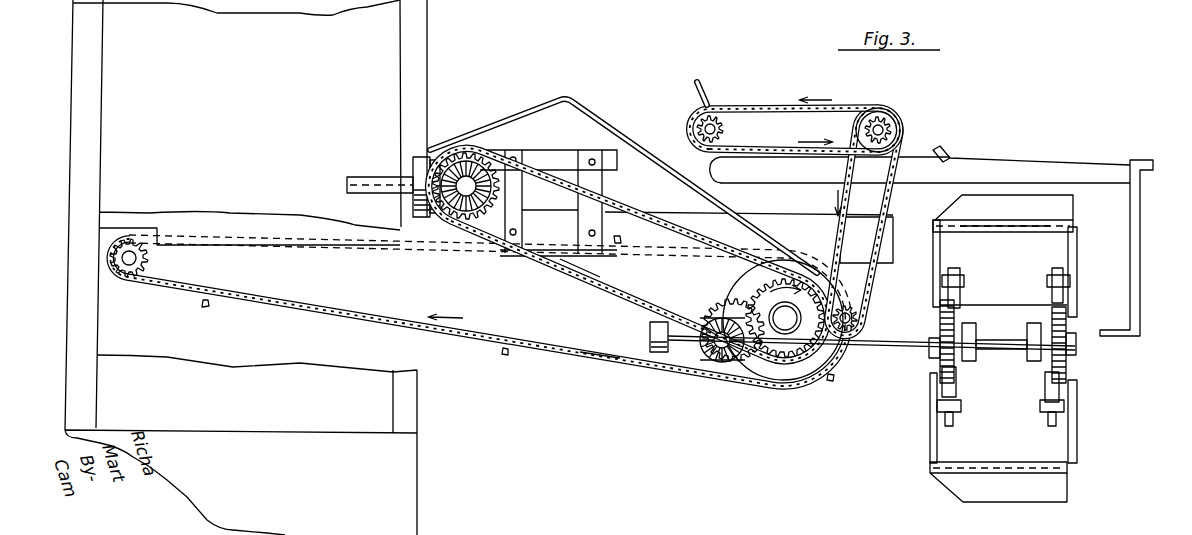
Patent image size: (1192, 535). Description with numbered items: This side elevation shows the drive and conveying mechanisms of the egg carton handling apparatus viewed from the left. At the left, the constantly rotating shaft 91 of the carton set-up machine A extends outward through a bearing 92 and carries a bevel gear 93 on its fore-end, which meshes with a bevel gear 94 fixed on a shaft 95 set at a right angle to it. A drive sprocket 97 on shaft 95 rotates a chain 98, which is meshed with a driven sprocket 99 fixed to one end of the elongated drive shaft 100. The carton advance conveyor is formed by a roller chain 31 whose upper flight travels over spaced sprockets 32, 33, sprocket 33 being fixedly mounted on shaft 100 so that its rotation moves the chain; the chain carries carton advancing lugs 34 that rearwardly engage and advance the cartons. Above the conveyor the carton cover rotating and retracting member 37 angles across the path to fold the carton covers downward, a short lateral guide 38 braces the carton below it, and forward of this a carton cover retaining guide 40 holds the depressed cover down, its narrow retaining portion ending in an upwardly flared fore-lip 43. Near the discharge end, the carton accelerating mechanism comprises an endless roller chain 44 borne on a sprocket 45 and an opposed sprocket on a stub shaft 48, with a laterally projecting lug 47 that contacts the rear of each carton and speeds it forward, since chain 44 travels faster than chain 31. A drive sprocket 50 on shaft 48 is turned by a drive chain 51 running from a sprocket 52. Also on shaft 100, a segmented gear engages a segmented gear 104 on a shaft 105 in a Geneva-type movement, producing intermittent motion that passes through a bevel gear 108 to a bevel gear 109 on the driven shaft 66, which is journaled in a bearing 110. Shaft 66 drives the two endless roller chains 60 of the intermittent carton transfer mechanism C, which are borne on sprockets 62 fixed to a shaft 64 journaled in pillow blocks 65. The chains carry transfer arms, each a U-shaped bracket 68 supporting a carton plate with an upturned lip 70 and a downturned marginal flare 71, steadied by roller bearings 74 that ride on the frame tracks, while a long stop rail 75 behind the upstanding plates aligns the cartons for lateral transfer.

The roller chain 31 is at (598, 364).
The sprocket 32 is at (138, 272).
The sprocket 33 is at (800, 368).
The carton advancing lug 34 is at (298, 240).
The carton cover rotating and retracting member 37 is at (608, 120).
The short lateral guide 38 is at (552, 152).
The carton cover retaining guide 40 is at (795, 172).
The upwardly flared fore-lip 43 is at (948, 151).
The endless roller chain 44 is at (778, 106).
The sprocket 45 is at (748, 129).
The lug 47 is at (706, 92).
The stub shaft 48 is at (881, 128).
The drive sprocket 50 is at (900, 140).
The drive chain 51 is at (894, 224).
The drive sprocket 52 is at (853, 308).
The endless roller chain 60 is at (936, 358).
The sprocket 62 is at (938, 340).
The shaft 64 is at (1000, 350).
The pillow block 65 is at (971, 362).
The driven shaft 66 is at (880, 350).
The U-shaped bracket 68 is at (941, 258).
The upturned lip 70 is at (1038, 230).
The downturned marginal flare 71 is at (998, 230).
The roller bearing 74 is at (1050, 283).
The stop rail 75 is at (1141, 200).
The constantly rotating shaft 91 is at (372, 180).
The bearing 92 is at (424, 160).
The bevel gear 93 is at (440, 162).
The bevel gear 94 is at (455, 200).
The shaft 95 is at (466, 212).
The drive sprocket 97 is at (506, 184).
The chain 98 is at (578, 270).
The driven sprocket 99 is at (782, 350).
The drive shaft 100 is at (782, 331).
The segmented gear 104 is at (735, 365).
The shaft 105 is at (735, 318).
The bevel gear 108 is at (725, 318).
The bevel gear 109 is at (700, 362).
The bearing 110 is at (648, 333).
The carton set-up machine A is at (262, 120).
The intermittent carton transfer mechanism C is at (1113, 275).